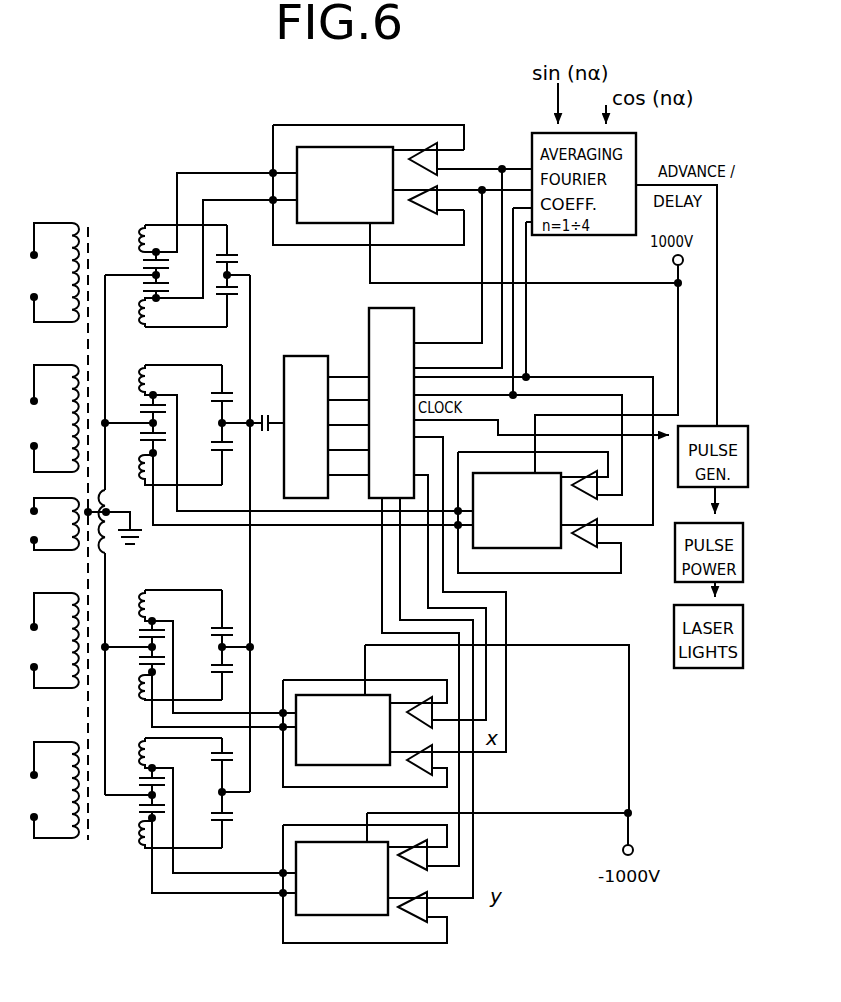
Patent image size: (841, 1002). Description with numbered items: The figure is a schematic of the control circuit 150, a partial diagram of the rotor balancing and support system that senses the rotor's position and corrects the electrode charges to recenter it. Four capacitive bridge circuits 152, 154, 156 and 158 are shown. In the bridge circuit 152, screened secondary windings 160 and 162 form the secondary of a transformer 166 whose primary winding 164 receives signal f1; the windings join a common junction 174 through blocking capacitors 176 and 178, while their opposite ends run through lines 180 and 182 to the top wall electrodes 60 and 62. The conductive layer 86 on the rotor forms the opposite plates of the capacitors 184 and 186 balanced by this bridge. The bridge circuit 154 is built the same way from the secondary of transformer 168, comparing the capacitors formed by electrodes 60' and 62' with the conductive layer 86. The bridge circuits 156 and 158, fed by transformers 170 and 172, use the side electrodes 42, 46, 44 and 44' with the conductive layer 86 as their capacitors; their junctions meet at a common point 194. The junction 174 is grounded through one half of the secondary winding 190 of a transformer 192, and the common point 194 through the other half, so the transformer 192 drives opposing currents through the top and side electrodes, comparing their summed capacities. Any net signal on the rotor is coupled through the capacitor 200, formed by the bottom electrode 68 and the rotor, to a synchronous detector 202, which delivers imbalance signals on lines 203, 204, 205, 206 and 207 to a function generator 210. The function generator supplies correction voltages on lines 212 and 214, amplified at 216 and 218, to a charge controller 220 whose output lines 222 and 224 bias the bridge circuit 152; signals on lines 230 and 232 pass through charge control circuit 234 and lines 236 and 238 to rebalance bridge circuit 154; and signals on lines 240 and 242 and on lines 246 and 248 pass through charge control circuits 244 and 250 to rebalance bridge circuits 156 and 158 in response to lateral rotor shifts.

The control circuit 150 is at (152, 163).
The bridge circuit 152 is at (140, 220).
The bridge circuit 154 is at (181, 377).
The bridge circuit 156 is at (198, 604).
The bridge circuit 158 is at (145, 847).
The secondary winding 160 is at (137, 232).
The secondary winding 162 is at (137, 318).
The primary winding 164 is at (72, 232).
The transformer 166 is at (98, 228).
The transformer 168 is at (90, 470).
The transformer 170 is at (90, 696).
The transformer 172 is at (95, 827).
The common junction 174 is at (160, 275).
The blocking capacitor 176 is at (142, 264).
The blocking capacitor 178 is at (140, 290).
The line 180 is at (223, 226).
The line 182 is at (203, 326).
The capacitor 184 is at (239, 260).
The capacitor 186 is at (218, 295).
The secondary winding 190 is at (102, 540).
The transformer 192 is at (90, 549).
The common point 194 is at (105, 596).
The capacitor 200 is at (271, 436).
The synchronous detector 202 is at (317, 356).
The output line 203 is at (335, 377).
The output line 204 is at (333, 400).
The output line 205 is at (333, 425).
The output line 206 is at (333, 450).
The output line 207 is at (333, 475).
The function generator 210 is at (414, 320).
The line 212 is at (481, 303).
The line 214 is at (528, 320).
The amplifier 216 is at (426, 212).
The amplifier 218 is at (426, 143).
The charge controller 220 is at (370, 147).
The output line 222 is at (214, 173).
The output line 224 is at (206, 198).
The line 230 is at (548, 377).
The line 232 is at (594, 396).
The charge control circuit 234 is at (530, 550).
The line 236 is at (270, 526).
The line 238 is at (358, 528).
The line 240 is at (488, 630).
The line 242 is at (508, 680).
The charge control circuit 244 is at (330, 694).
The line 246 is at (461, 782).
The line 248 is at (474, 832).
The charge control circuit 250 is at (352, 841).
The side electrode 42 is at (225, 625).
The side electrode 44 is at (207, 765).
The side electrode 44' is at (235, 821).
The side electrode 46 is at (225, 675).
The top wall electrode 60 is at (239, 250).
The top wall electrode 60' is at (230, 391).
The top wall electrode 62 is at (232, 305).
The top wall electrode 62' is at (210, 454).
The bottom electrode 68 is at (266, 413).
The conductive layer 86 is at (255, 300).